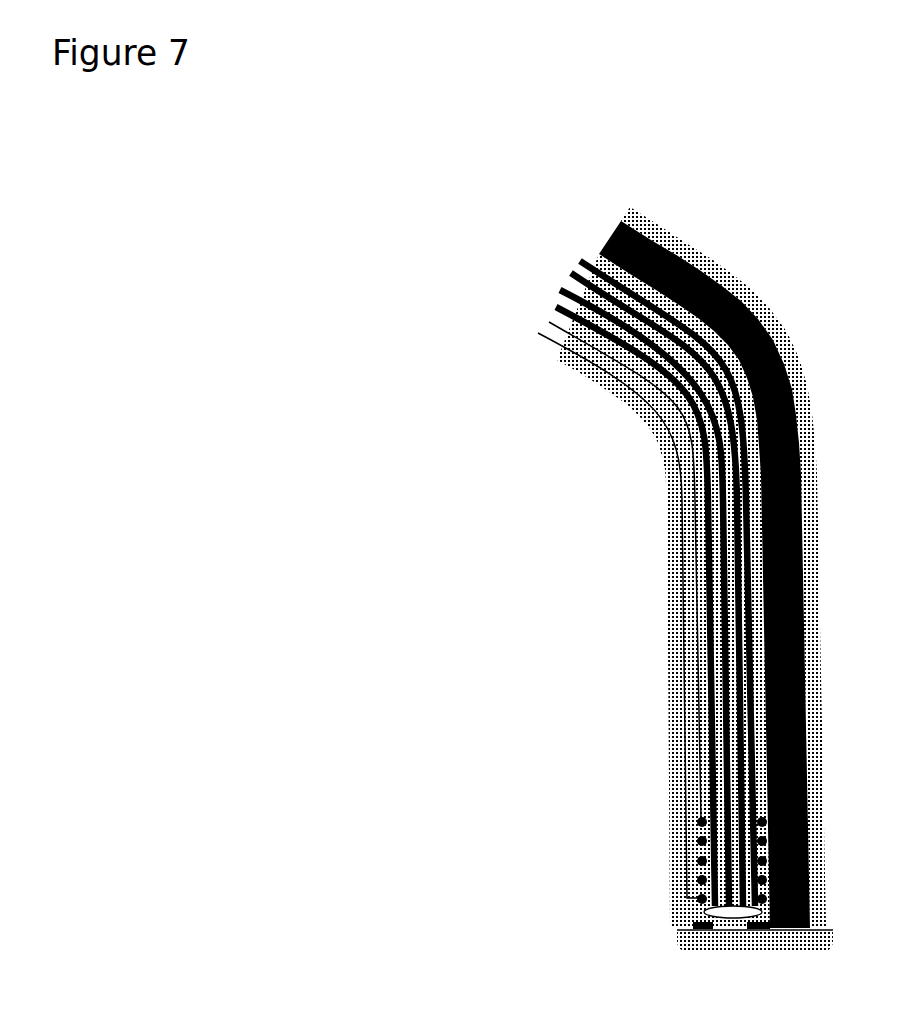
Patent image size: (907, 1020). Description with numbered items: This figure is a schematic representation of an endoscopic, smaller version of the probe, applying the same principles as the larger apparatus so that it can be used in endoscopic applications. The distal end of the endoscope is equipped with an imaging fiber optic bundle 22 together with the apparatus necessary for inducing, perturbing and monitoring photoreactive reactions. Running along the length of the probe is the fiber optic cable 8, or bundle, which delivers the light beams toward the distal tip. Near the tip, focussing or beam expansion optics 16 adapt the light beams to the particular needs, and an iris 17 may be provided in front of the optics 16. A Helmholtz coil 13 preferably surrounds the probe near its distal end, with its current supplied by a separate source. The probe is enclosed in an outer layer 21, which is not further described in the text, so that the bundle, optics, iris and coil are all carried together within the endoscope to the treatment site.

The fiber optic cable 8 is at (639, 583).
The Helmholtz coil 13 is at (652, 613).
The focussing or beam expansion optics 16 is at (708, 912).
The iris 17 is at (697, 919).
The shaft wall 21 is at (690, 571).
The imaging fiber optic bundle 22 is at (820, 907).